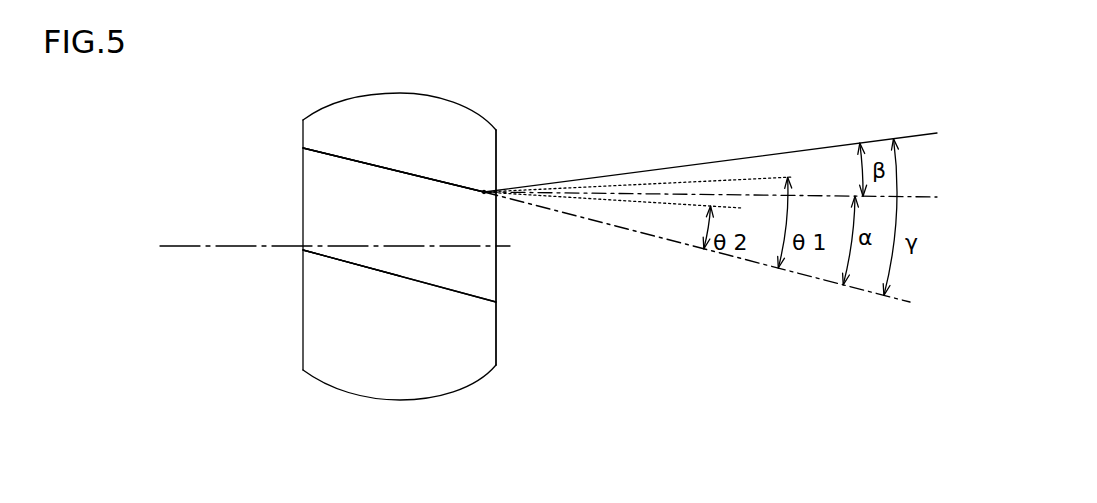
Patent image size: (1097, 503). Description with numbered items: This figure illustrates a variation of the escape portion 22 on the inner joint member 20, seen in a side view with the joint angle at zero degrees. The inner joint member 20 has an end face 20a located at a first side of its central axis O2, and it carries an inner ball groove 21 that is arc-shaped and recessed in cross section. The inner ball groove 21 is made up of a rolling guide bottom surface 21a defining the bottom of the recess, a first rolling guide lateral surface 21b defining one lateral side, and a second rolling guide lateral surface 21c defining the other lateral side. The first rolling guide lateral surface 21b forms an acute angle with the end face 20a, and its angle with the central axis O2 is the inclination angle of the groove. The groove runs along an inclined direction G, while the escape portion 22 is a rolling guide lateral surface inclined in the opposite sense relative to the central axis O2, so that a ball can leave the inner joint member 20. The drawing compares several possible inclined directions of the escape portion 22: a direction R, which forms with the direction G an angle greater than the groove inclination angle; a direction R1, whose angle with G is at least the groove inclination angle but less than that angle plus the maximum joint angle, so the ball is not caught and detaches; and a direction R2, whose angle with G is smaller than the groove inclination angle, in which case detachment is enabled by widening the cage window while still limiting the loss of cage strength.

The inner joint member 20 is at (356, 112).
The end face 20a is at (497, 176).
The inner ball groove 21 is at (190, 131).
The rolling guide bottom surface 21a is at (333, 195).
The first rolling guide lateral surface 21b is at (345, 157).
The second rolling guide lateral surface 21c is at (341, 262).
The escape portion 22 is at (487, 197).
The central axis of the inner joint member O2 is at (189, 246).
The inclined direction of the escape portion R is at (722, 158).
The inclined direction of the escape portion R1 is at (656, 178).
The inclined direction of the escape portion R2 is at (627, 210).
The inclined direction of the inner ball groove G is at (708, 257).